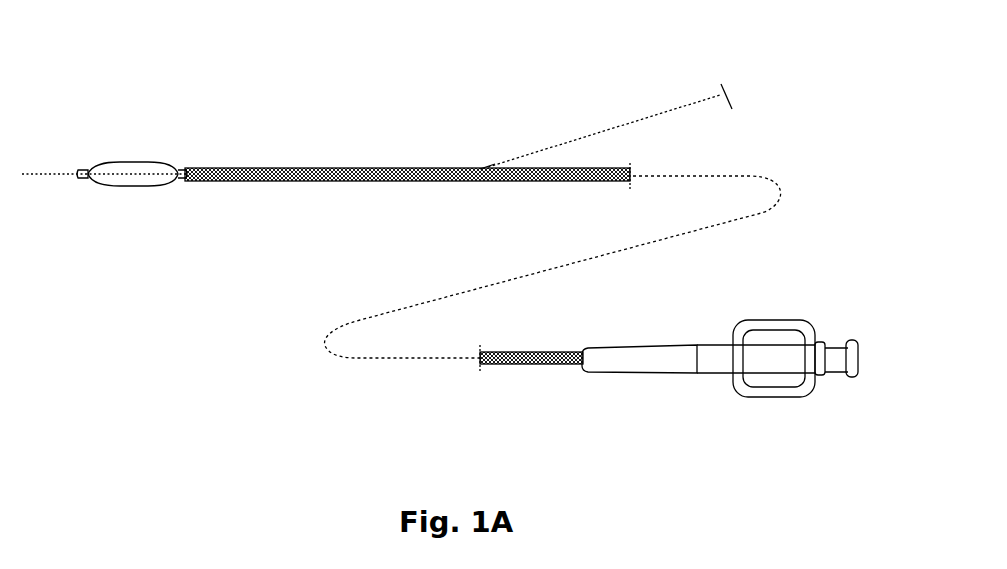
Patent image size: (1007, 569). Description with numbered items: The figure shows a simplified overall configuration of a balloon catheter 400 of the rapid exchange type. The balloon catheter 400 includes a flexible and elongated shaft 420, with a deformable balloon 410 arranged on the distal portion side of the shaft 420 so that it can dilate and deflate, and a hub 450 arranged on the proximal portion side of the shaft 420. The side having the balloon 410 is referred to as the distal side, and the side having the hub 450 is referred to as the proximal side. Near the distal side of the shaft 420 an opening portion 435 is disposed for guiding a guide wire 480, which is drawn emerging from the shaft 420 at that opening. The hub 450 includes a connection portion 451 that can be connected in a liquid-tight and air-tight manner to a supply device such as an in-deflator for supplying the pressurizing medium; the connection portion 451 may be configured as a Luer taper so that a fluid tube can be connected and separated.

The balloon catheter 400 is at (92, 38).
The balloon 410 is at (133, 162).
The shaft 420 is at (355, 168).
The opening portion 435 is at (480, 169).
The guide wire 480 is at (632, 122).
The hub 450 is at (805, 311).
The connection portion 451 is at (852, 379).